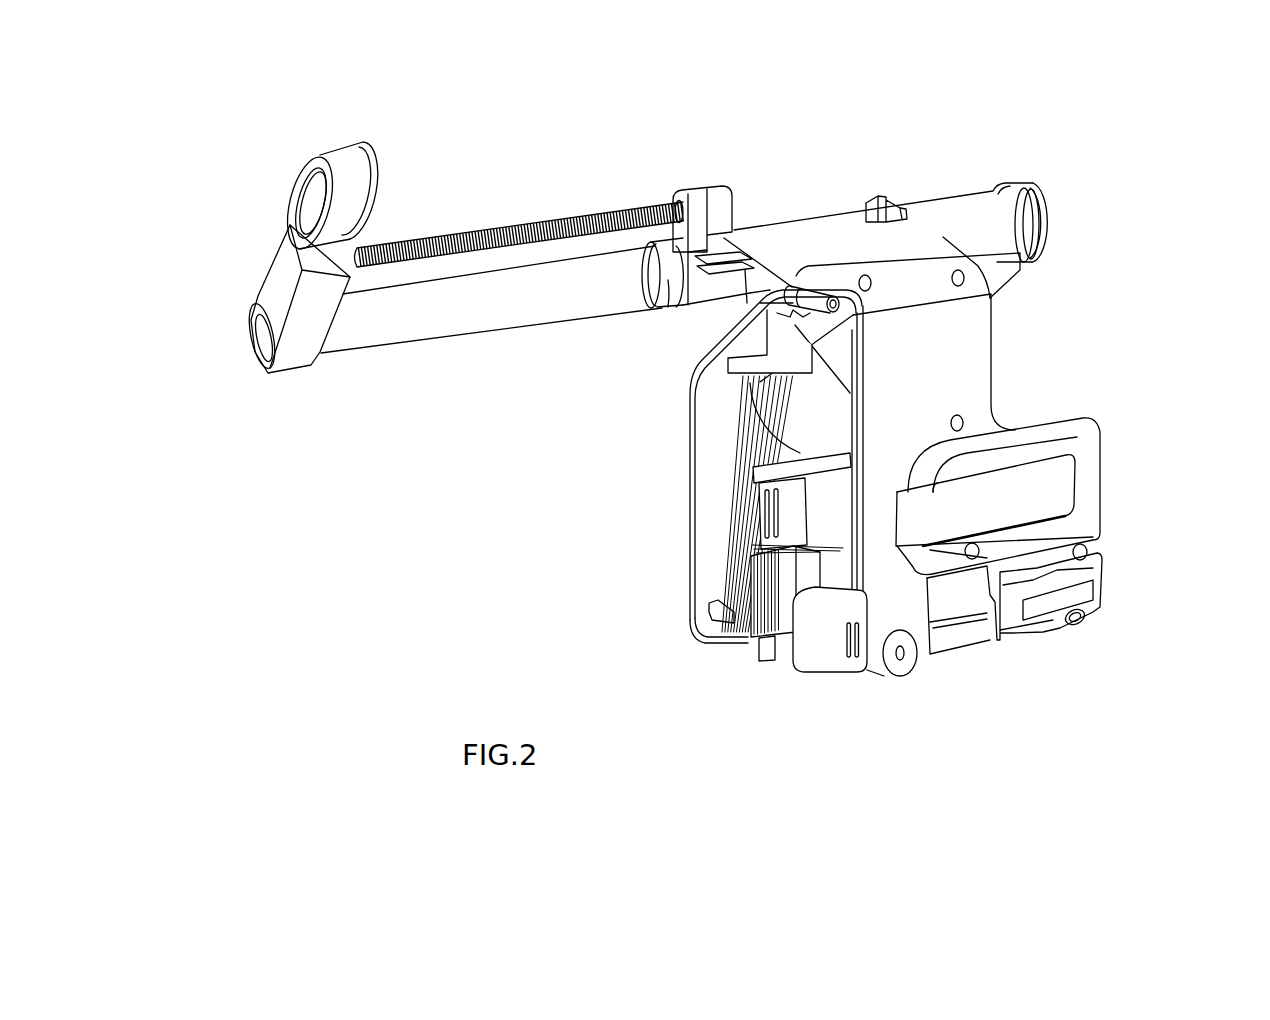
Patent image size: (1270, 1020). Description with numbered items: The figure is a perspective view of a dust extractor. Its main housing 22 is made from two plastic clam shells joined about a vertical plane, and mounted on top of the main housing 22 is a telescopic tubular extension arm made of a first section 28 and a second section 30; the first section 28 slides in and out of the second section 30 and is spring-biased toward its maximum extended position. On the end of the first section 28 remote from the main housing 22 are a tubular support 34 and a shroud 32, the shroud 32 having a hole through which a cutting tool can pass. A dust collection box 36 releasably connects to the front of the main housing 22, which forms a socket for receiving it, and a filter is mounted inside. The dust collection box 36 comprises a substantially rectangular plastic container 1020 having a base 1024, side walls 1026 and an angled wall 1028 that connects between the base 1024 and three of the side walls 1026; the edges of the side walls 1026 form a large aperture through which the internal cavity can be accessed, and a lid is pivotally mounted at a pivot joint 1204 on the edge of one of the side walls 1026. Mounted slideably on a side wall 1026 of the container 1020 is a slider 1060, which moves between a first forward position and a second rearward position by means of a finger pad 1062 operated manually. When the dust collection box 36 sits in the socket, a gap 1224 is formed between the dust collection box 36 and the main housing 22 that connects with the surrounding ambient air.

The main housing 22 is at (1086, 448).
The first section 28 is at (415, 332).
The second section 30 is at (684, 289).
The shroud 32 is at (322, 161).
The tubular support 34 is at (280, 291).
The dust collection box 36 is at (632, 460).
The rectangular plastic container 1020 is at (766, 666).
The base 1024 is at (733, 648).
The side walls 1026 is at (820, 413).
The angled wall 1028 is at (738, 346).
The slider 1060 is at (800, 527).
The finger pad 1062 is at (770, 513).
The pivot joint 1204 is at (813, 295).
The gap 1224 is at (852, 378).